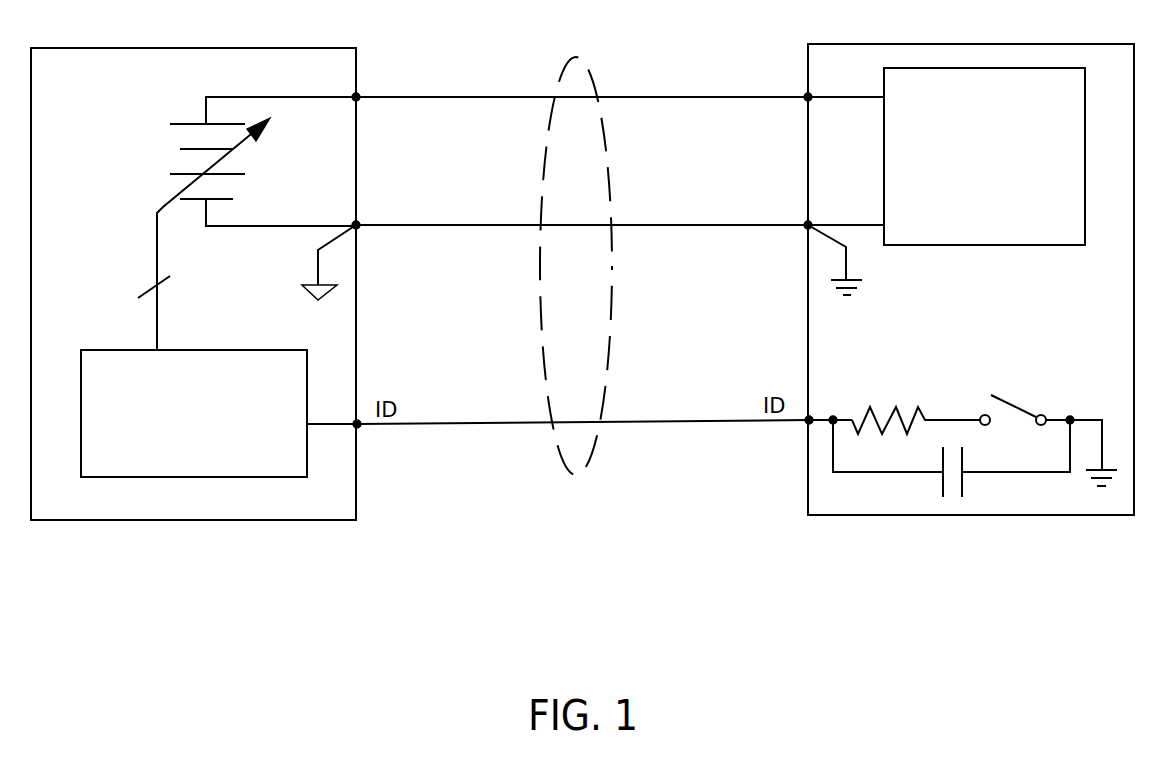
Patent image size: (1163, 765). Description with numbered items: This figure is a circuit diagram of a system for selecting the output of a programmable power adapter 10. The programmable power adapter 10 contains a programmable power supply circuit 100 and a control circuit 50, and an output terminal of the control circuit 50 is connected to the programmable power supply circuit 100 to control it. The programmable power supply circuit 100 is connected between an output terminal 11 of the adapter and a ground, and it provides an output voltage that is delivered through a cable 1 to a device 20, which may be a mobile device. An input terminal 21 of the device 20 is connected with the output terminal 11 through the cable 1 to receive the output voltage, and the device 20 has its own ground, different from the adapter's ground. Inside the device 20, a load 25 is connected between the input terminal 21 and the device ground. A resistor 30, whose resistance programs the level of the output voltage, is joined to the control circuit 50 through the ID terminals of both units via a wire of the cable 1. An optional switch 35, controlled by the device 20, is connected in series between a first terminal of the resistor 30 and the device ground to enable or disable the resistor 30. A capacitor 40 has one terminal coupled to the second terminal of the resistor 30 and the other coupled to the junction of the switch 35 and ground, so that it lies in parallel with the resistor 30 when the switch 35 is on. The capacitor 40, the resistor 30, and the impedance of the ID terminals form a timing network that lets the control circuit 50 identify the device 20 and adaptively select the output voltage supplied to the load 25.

The cable 1 is at (578, 250).
The programmable power adapter 10 is at (193, 271).
The output terminal 11 is at (373, 245).
The programmable power supply circuit 100 is at (204, 211).
The control circuit 50 is at (219, 400).
The device 20 is at (971, 263).
The input terminal 21 is at (793, 244).
The load 25 is at (946, 173).
The resistor 30 is at (916, 405).
The switch 35 is at (1025, 400).
The capacitor 40 is at (970, 477).